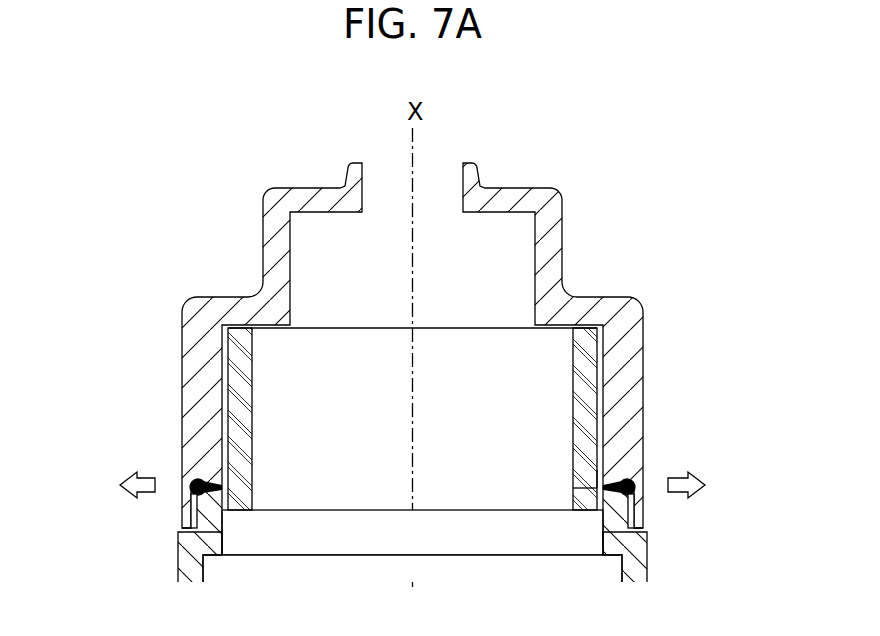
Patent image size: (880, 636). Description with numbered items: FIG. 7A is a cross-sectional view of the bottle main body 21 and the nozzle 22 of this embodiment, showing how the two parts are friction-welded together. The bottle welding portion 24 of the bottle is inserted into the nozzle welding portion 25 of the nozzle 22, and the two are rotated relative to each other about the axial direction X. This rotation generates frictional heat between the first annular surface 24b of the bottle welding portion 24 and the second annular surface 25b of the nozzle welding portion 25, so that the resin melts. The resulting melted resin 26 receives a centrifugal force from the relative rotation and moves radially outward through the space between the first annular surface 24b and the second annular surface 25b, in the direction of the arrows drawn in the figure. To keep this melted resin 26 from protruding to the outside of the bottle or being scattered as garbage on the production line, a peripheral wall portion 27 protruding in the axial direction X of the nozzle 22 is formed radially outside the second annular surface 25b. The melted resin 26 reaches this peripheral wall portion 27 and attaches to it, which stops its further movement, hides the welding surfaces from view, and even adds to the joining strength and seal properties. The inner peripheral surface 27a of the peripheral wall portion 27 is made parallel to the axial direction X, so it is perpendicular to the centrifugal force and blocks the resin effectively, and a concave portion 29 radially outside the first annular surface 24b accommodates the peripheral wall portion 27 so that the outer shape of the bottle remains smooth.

The base body 21 is at (142, 577).
The nozzle 22 is at (453, 345).
The bottle welding portion 24 is at (419, 411).
The first annular surface 24b is at (610, 483).
The nozzle welding portion 25 is at (637, 352).
The second annular surface 25b is at (585, 497).
The melted resin 26 is at (370, 475).
The peripheral wall portion 27 is at (458, 530).
The inner peripheral surface 27a is at (642, 543).
The concave portion 29 is at (196, 513).